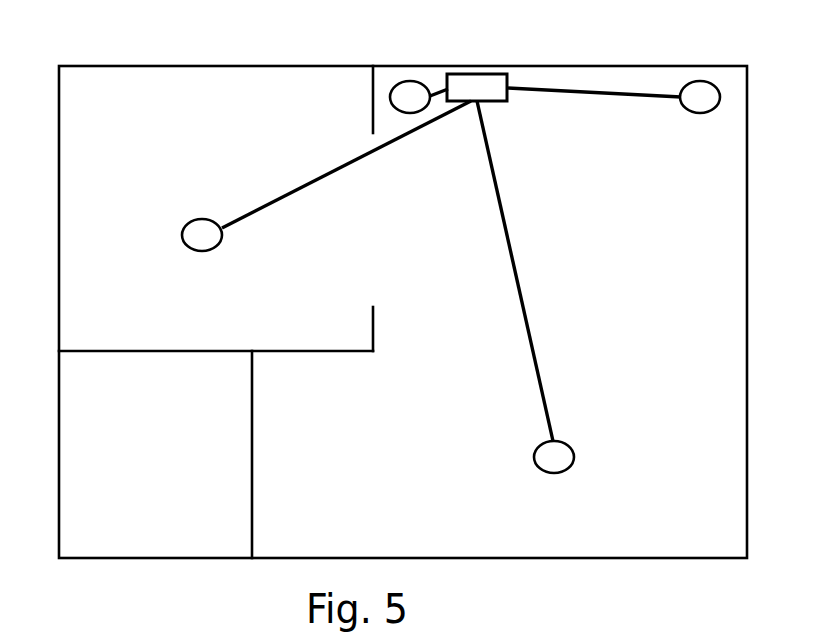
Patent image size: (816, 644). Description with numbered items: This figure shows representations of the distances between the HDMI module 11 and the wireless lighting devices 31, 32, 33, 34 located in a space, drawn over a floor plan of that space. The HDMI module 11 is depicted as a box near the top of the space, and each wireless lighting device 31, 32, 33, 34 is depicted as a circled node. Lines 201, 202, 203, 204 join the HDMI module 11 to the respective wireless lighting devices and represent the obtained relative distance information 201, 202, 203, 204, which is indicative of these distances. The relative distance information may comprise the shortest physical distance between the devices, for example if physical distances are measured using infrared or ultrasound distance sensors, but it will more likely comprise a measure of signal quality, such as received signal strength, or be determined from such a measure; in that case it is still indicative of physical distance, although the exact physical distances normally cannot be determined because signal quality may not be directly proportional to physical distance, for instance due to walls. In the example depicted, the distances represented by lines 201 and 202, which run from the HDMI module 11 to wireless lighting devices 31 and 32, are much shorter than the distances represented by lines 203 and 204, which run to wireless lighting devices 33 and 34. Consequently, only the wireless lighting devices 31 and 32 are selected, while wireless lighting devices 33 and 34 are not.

The HDMI module 11 is at (466, 99).
The wireless lighting device 31 is at (410, 97).
The wireless lighting device 32 is at (700, 97).
The wireless lighting device 33 is at (554, 457).
The wireless lighting device 34 is at (202, 235).
The relative distance information 201 is at (443, 89).
The relative distance information 202 is at (582, 88).
The relative distance information 203 is at (530, 328).
The relative distance information 204 is at (317, 172).